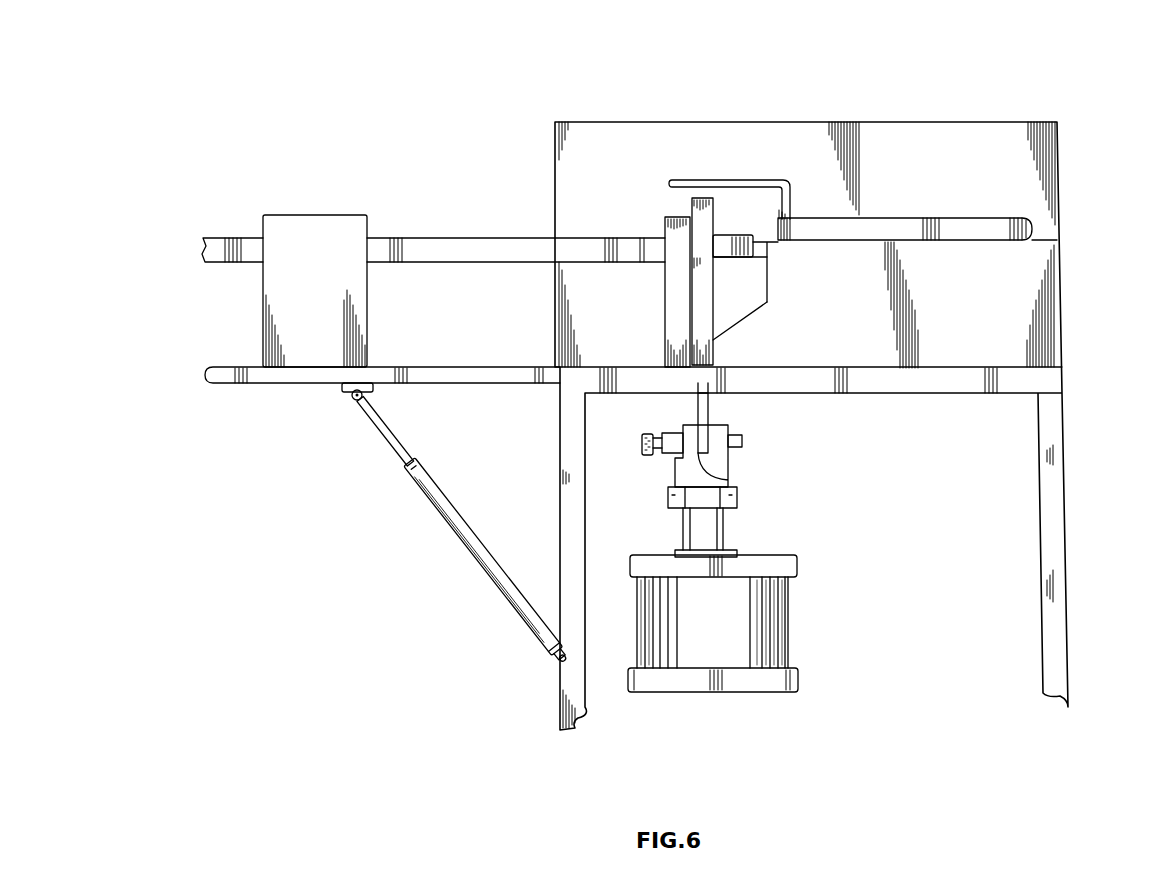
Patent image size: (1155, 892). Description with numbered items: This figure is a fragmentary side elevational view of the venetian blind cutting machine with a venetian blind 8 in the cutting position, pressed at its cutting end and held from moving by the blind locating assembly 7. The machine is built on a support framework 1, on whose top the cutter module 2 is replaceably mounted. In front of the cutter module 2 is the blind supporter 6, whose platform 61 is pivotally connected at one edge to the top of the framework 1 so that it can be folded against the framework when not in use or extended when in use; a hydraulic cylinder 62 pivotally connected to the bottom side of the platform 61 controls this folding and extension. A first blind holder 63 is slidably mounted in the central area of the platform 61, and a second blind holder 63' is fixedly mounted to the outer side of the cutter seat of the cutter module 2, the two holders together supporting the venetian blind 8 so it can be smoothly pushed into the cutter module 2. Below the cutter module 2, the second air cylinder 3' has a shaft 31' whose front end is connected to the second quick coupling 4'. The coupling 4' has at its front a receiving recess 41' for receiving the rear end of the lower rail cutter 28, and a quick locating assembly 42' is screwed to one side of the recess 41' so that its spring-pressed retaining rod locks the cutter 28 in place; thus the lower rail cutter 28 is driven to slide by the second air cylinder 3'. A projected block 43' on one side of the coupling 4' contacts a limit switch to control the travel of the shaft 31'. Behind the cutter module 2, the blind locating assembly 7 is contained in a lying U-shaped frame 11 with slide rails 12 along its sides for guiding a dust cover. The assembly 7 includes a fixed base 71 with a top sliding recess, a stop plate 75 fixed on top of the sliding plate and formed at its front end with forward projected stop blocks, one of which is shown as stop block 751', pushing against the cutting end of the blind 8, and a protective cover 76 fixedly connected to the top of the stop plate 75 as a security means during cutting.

The support framework 1 is at (1066, 374).
The lying U-shaped frame 11 is at (1036, 297).
The slide rails 12 is at (907, 220).
The venetian blind 8 is at (482, 236).
The first blind holder 63 is at (315, 249).
The platform 61 is at (457, 384).
The blind supporter 6 is at (297, 390).
The hydraulic cylinder 62 is at (418, 492).
The protective cover 76 is at (738, 180).
The second blind holder 63' is at (650, 292).
The blind locating assembly 7 is at (763, 287).
The stop block 751' is at (738, 261).
The stop plate 75 is at (792, 251).
The fixed base 71 is at (812, 242).
The cutter module 2 is at (704, 360).
The lower rail cutter 28 is at (714, 406).
The second quick coupling 4' is at (744, 456).
The projected block 43' is at (771, 432).
The quick locating assembly 42' is at (645, 473).
The receiving recess 41' is at (777, 499).
The shaft 31' is at (747, 532).
The second air cylinder 3' is at (756, 623).